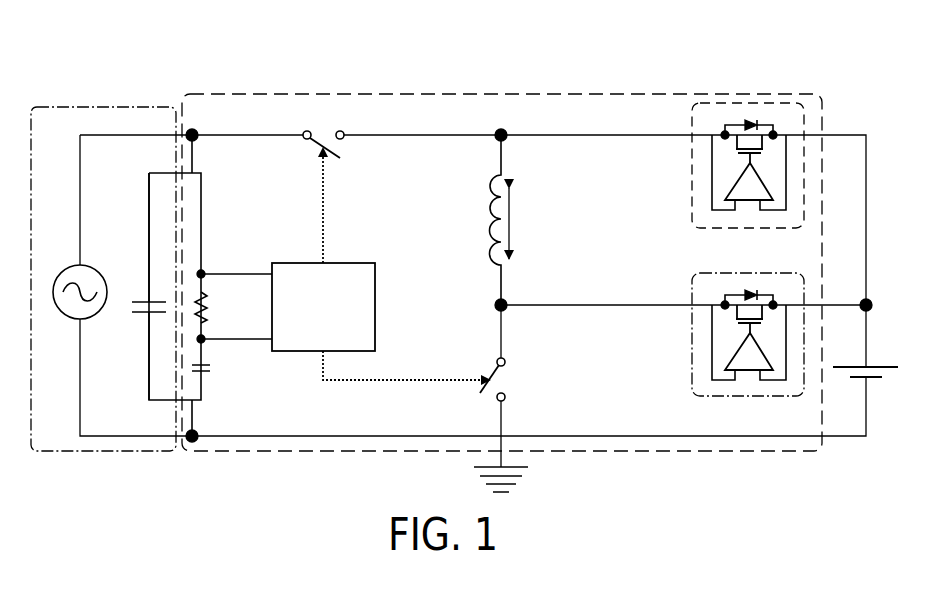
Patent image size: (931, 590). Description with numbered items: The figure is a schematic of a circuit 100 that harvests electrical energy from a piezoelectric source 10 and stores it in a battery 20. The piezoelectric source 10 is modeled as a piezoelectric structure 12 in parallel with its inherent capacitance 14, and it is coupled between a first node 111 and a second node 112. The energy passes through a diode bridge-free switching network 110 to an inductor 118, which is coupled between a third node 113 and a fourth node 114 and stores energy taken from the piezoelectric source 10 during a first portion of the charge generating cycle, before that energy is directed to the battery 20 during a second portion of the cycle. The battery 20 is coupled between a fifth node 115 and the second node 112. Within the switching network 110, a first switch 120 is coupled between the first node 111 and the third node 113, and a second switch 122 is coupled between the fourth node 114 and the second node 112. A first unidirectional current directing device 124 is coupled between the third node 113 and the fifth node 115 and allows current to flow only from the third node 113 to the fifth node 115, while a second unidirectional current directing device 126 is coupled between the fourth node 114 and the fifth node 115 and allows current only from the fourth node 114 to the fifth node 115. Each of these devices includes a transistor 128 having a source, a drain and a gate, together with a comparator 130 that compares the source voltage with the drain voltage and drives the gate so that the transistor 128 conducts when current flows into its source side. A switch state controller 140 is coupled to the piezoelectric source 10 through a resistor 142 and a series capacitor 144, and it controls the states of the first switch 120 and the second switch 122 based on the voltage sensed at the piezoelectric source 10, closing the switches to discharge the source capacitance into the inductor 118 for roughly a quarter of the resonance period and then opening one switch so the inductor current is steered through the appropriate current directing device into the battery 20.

The circuit 100 is at (186, 60).
The piezoelectric source 10 is at (111, 105).
The piezoelectric structure 12 is at (84, 268).
The inherent capacitance 14 is at (146, 302).
The switching network 110 is at (255, 93).
The first node 111 is at (192, 130).
The second node 112 is at (194, 433).
The third node 113 is at (500, 132).
The fourth node 114 is at (504, 303).
The fifth node 115 is at (863, 303).
The inductor 118 is at (490, 222).
The first switch 120 is at (340, 131).
The second switch 122 is at (505, 363).
The first unidirectional current directing device 124 is at (732, 232).
The second unidirectional current directing device 126 is at (732, 400).
The transistor 128 is at (740, 146).
The comparator 130 is at (752, 176).
The switch state controller 140 is at (341, 263).
The resistor 142 is at (206, 310).
The series capacitor 144 is at (204, 365).
The battery 20 is at (879, 366).